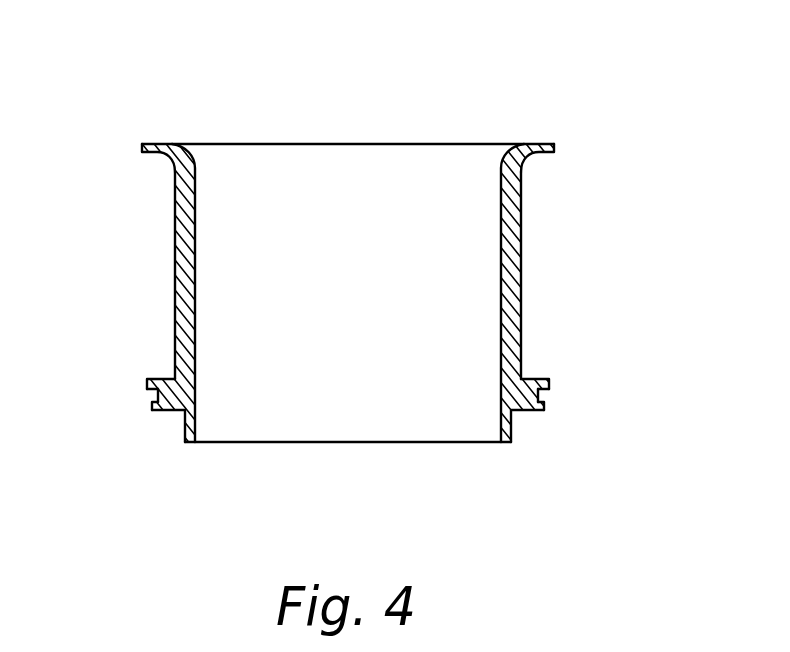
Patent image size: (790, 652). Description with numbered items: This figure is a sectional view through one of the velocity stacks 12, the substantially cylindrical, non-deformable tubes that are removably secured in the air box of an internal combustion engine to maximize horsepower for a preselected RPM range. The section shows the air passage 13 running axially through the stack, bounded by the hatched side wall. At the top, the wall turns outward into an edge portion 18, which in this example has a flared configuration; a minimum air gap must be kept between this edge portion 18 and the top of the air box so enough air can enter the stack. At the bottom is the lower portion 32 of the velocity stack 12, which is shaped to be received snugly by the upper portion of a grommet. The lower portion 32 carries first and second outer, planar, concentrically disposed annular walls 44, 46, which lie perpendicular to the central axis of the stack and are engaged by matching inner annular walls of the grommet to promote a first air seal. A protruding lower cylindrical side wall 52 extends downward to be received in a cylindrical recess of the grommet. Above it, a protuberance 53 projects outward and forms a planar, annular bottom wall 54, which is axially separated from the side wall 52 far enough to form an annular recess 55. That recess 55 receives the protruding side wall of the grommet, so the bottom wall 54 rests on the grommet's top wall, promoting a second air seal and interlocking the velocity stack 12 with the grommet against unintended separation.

The velocity stack 12 is at (600, 238).
The air passage 13 is at (353, 173).
The edge portion 18 is at (157, 143).
The lower portion 32 is at (173, 378).
The first outer planar annular wall 44 is at (167, 412).
The second outer planar annular wall 46 is at (187, 440).
The lower cylindrical side wall 52 is at (153, 409).
The protuberance 53 is at (157, 383).
The bottom wall 54 is at (158, 392).
The annular recess 55 is at (163, 393).